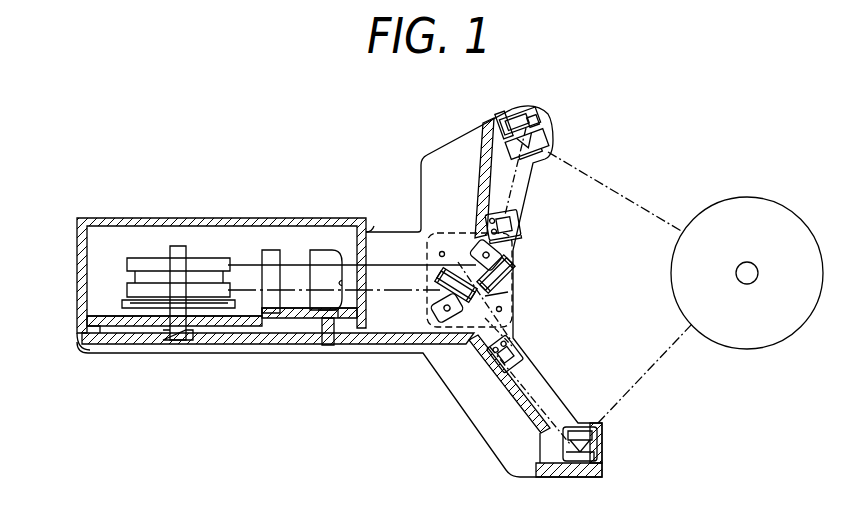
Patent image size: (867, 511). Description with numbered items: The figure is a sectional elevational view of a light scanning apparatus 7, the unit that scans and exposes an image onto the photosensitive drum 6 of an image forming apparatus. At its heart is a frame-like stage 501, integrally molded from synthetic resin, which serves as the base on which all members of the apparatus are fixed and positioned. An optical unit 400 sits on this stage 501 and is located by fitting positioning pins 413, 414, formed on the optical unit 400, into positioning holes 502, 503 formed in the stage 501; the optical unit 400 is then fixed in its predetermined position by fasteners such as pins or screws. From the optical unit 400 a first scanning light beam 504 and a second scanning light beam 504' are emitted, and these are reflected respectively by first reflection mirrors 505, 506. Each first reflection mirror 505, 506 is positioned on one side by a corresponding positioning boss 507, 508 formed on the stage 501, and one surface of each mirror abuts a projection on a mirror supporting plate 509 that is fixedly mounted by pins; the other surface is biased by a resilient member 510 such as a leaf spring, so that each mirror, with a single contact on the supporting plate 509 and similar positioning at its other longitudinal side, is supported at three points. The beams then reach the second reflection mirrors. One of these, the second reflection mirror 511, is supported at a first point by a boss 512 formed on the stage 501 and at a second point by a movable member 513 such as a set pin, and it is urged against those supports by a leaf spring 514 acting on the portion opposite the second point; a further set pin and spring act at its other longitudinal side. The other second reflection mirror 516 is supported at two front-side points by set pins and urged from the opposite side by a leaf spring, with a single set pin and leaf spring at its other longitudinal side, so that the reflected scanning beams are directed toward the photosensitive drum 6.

The light scanning apparatus 7 is at (190, 210).
The optical unit 400 is at (278, 214).
The photosensitive drum 6 is at (706, 208).
The positioning pin 413 is at (90, 334).
The positioning pin 414 is at (333, 346).
The stage 501 is at (142, 350).
The positioning hole 502 is at (303, 346).
The positioning hole 503 is at (78, 348).
The first scanning light beam 504 is at (438, 187).
The second scanning light beam 504' is at (491, 405).
The first reflection mirror 505 is at (515, 260).
The first reflection mirror 506 is at (514, 295).
The positioning boss 507 is at (444, 250).
The positioning boss 508 is at (505, 311).
The mirror supporting plate 509 is at (500, 328).
The resilient member 510 is at (517, 280).
The second reflection mirror 511 is at (540, 117).
The boss 512 is at (524, 118).
The movable member 513 is at (503, 124).
The leaf spring 514 is at (545, 139).
The second reflection mirror 516 is at (596, 438).